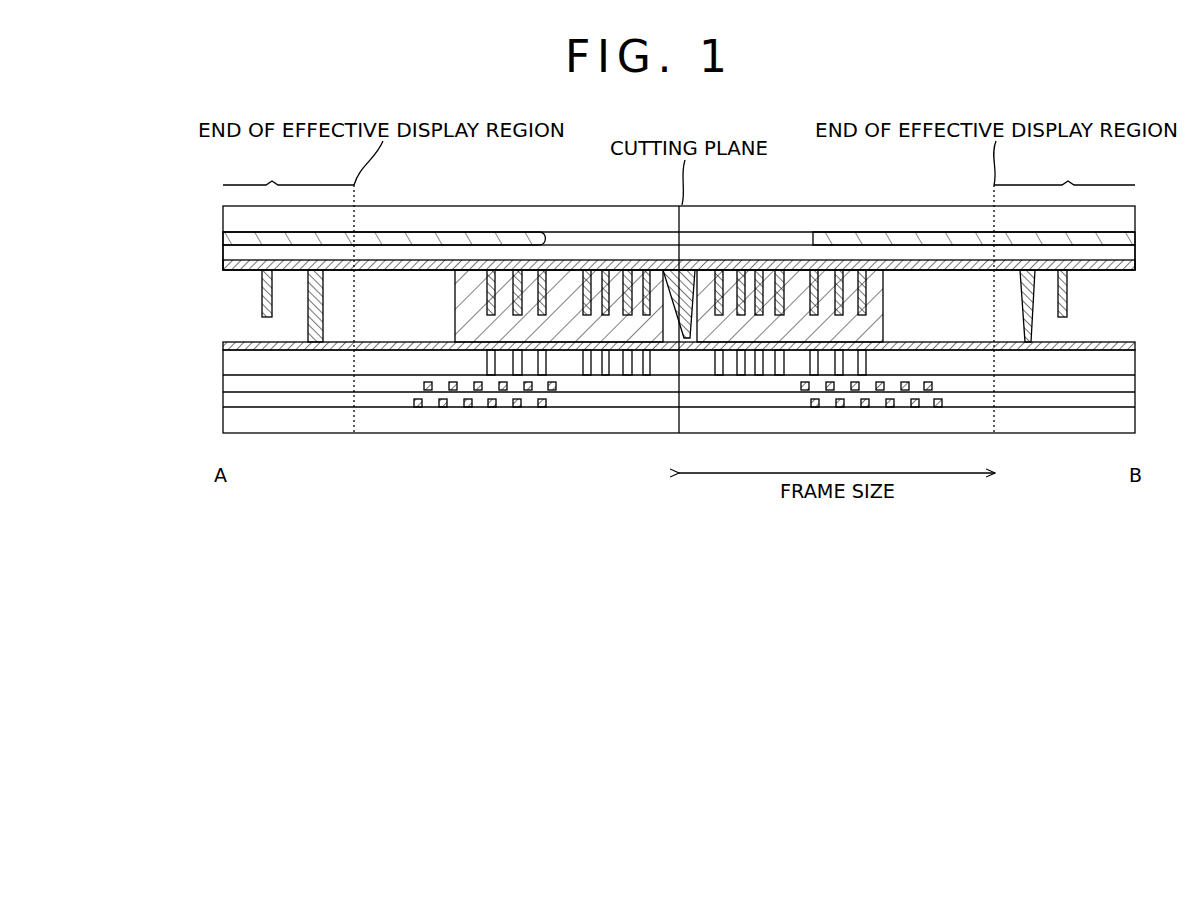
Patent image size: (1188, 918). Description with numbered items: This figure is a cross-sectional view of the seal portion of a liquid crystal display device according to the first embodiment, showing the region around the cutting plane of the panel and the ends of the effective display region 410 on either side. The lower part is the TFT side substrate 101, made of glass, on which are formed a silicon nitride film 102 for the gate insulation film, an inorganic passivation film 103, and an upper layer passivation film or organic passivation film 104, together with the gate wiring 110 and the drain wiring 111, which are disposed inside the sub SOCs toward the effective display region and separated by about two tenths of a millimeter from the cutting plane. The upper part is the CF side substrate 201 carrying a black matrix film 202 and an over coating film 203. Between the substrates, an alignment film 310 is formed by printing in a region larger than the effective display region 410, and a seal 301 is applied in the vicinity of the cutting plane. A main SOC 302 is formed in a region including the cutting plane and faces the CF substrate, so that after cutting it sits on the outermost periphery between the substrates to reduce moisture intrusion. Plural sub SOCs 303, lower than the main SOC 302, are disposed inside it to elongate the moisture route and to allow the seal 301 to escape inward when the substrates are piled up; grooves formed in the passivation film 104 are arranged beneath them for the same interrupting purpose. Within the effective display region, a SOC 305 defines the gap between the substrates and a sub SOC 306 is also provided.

The TFT side substrate 101 is at (398, 420).
The silicon nitride film 102 is at (235, 400).
The inorganic passivation film 103 is at (235, 383).
The upper layer passivation film 104 is at (235, 347).
The gate wiring 110 is at (492, 408).
The drain wiring 111 is at (528, 392).
The CF side substrate 201 is at (479, 213).
The black matrix film 202 is at (223, 238).
The overcoat layer 203 is at (223, 252).
The seal 301 is at (455, 312).
The main SOC 302 is at (690, 265).
The sub SOC 303 is at (866, 288).
The SOC 305 is at (1030, 345).
The sub SOC 306 is at (1067, 293).
The alignment film 310 is at (653, 319).
The effective display region 410 is at (679, 170).